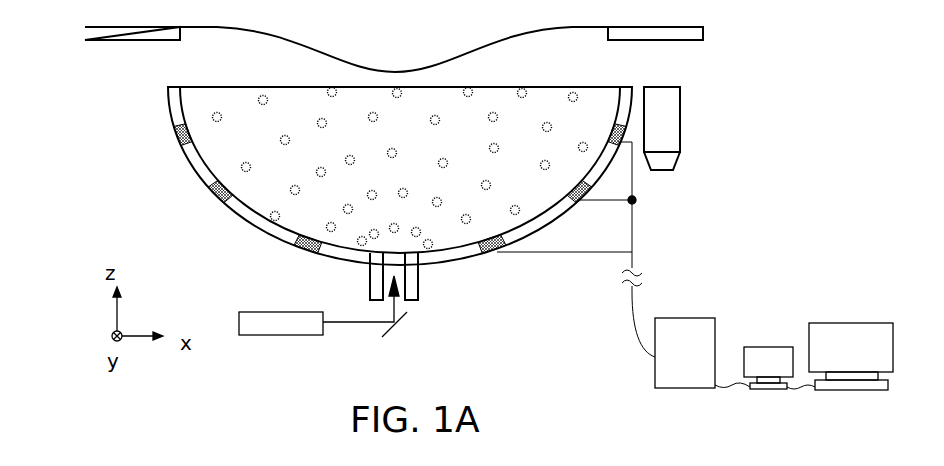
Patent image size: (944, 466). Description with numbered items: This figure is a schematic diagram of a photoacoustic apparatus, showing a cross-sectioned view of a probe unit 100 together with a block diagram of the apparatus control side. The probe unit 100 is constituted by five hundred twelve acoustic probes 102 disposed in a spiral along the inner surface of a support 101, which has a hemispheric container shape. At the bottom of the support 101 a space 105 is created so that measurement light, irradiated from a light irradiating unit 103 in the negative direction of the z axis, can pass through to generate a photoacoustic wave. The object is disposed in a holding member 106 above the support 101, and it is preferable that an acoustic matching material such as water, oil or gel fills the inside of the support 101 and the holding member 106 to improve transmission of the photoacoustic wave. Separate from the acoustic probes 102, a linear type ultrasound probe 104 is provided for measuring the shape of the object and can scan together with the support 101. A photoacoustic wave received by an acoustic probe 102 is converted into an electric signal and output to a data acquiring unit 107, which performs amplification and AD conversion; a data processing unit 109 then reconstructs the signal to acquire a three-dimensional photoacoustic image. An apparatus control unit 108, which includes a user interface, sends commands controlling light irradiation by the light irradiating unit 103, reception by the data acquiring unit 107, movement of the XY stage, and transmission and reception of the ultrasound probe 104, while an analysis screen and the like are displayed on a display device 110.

The probe unit 100 is at (125, 122).
The support 101 is at (190, 160).
The acoustic probe 102 is at (487, 254).
The light irradiating unit 103 is at (290, 335).
The linear type ultrasound probe 104 is at (668, 108).
The space 105 is at (395, 256).
The holding member 106 is at (558, 43).
The data acquiring unit 107 is at (698, 318).
The apparatus control unit 108 is at (768, 390).
The data processing unit 109 is at (851, 390).
The display device 110 is at (820, 323).